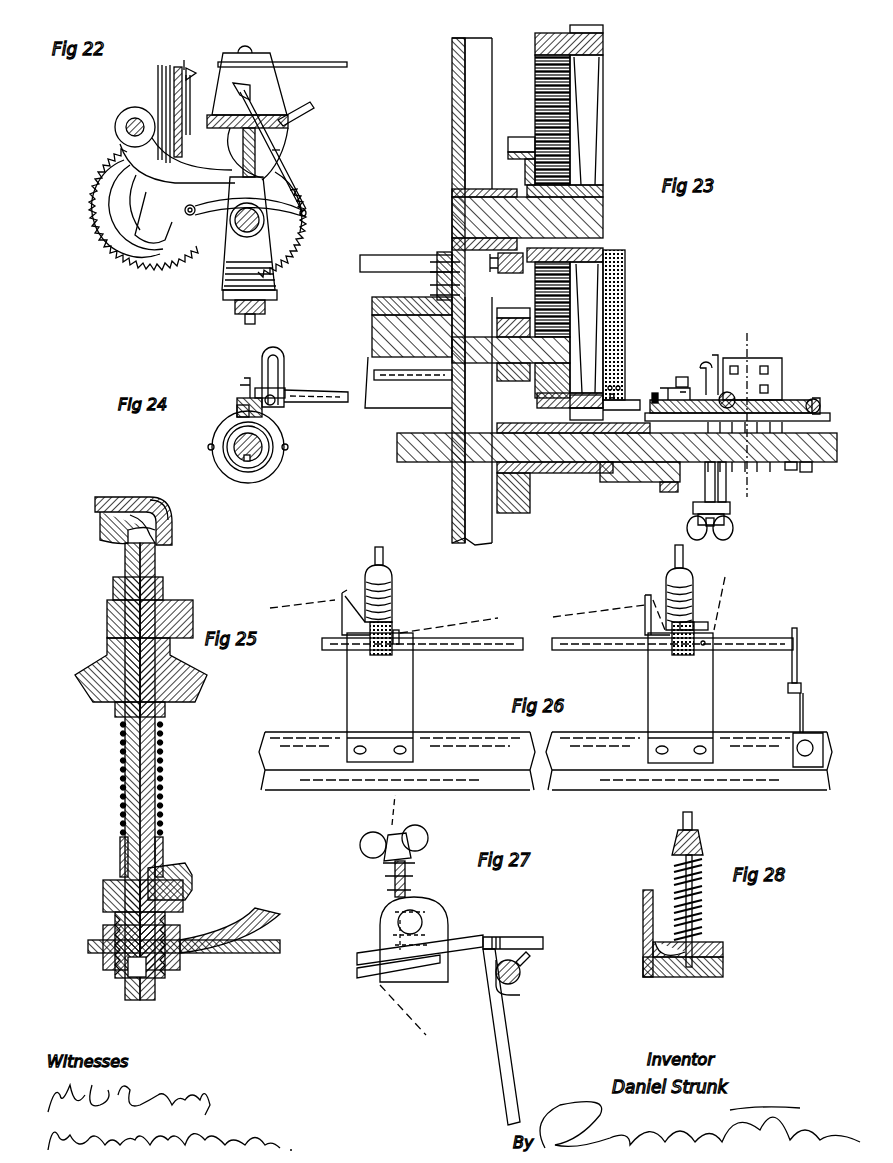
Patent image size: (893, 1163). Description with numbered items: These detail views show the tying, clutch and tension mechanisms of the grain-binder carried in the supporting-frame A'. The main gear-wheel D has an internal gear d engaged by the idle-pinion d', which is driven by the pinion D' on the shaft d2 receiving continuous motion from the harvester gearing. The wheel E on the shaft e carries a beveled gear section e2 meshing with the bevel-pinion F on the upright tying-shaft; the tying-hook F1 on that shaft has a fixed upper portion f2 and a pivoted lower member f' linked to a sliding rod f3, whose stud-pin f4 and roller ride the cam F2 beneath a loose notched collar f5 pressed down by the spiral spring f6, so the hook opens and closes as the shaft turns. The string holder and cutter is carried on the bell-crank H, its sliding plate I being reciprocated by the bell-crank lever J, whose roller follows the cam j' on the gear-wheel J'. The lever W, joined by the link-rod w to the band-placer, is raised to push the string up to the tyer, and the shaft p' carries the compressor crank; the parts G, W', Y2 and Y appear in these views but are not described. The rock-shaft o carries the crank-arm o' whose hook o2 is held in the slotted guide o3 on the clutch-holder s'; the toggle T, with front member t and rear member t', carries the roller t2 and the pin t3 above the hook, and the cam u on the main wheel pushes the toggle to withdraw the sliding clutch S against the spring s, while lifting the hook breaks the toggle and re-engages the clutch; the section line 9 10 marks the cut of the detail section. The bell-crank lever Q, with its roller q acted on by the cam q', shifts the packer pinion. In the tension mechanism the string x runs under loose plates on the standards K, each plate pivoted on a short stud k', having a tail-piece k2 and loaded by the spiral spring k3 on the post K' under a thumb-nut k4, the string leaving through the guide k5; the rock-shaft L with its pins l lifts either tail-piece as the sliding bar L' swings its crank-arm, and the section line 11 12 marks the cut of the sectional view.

In FIG. 22, the bar G is at (282, 56).
In FIG. 22, the wheel E is at (253, 250).
In FIG. 22, the shaft e is at (247, 237).
In FIG. 22, the beveled gear section e2 is at (285, 224).
In FIG. 22, the gear-wheel J' is at (143, 209).
In FIG. 22, the cam j' is at (136, 207).
In FIG. 22, the shaft p' is at (121, 127).
In FIG. 22, the bell-crank lever J is at (204, 133).
In FIG. 22, the bell-crank H is at (176, 114).
In FIG. 22, the sliding plate I is at (182, 57).
In FIG. 22, the lever W is at (245, 202).
In FIG. 22, the connecting rod W' is at (285, 162).
In FIG. 22, the link-rod w is at (282, 150).
In FIG. 22, the arm Y2 is at (242, 82).
In FIG. 22, the lever Y is at (296, 107).
In FIG. 23, the supporting-frame A' is at (472, 291).
In FIG. 23, the internal gear d is at (556, 105).
In FIG. 23, the main gear-wheel D is at (594, 224).
In FIG. 23, the roller q is at (521, 152).
In FIG. 23, the bell-crank lever Q is at (415, 262).
In FIG. 23, the cam q' is at (506, 279).
In FIG. 23, the idle-pinion d' is at (533, 299).
In FIG. 23, the rock-shaft o is at (408, 382).
In FIG. 23, the shaft d2 is at (602, 468).
In FIG. 24, the shaft d2 is at (262, 447).
In FIG. 23, the pinion D' is at (561, 470).
In FIG. 23, the cam u is at (635, 398).
In FIG. 23, the toggle T is at (731, 391).
In FIG. 23, the front member t is at (816, 392).
In FIG. 24, the front member t is at (237, 397).
In FIG. 23, the clutch-holder s' is at (744, 415).
In FIG. 23, the roller t2 is at (657, 395).
In FIG. 23, the rear member t' is at (680, 376).
In FIG. 23, the pin t3 is at (733, 390).
In FIG. 24, the pin t3 is at (280, 388).
In FIG. 23, the section line 10 is at (741, 403).
In FIG. 23, the spring s is at (760, 455).
In FIG. 24, the spring s is at (251, 439).
In FIG. 23, the sliding clutch S is at (655, 492).
In FIG. 24, the sliding clutch S is at (248, 483).
In FIG. 23, the section line 9 is at (718, 501).
In FIG. 24, the slotted guide o3 is at (284, 370).
In FIG. 24, the hook o2 is at (275, 405).
In FIG. 24, the crank-arm o' is at (316, 407).
In FIG. 25, the bevel-pinion F is at (205, 685).
In FIG. 25, the upper portion of tying-hook f2 is at (100, 497).
In FIG. 25, the lower member of tying-hook f' is at (112, 531).
In FIG. 25, the tying-hook F1 is at (153, 517).
In FIG. 25, the sliding rod f3 is at (160, 592).
In FIG. 25, the spiral spring f6 is at (162, 805).
In FIG. 25, the loose collar f5 is at (120, 845).
In FIG. 25, the stud-pin f4 is at (192, 880).
In FIG. 25, the cam F2 is at (103, 902).
In FIG. 26, the standards K is at (530, 698).
In FIG. 27, the standards K is at (426, 1030).
In FIG. 28, the standards K is at (699, 948).
In FIG. 26, the pins l is at (396, 648).
In FIG. 27, the pins l is at (522, 962).
In FIG. 26, the spiral spring k3 is at (392, 600).
In FIG. 27, the spiral spring k3 is at (412, 878).
In FIG. 28, the spiral spring k3 is at (703, 908).
In FIG. 26, the thumb-nuts k4 is at (383, 553).
In FIG. 27, the thumb-nuts k4 is at (360, 848).
In FIG. 28, the thumb-nuts k4 is at (703, 840).
In FIG. 26, the guide k5 is at (349, 607).
In FIG. 27, the guide k5 is at (432, 918).
In FIG. 28, the guide k5 is at (643, 920).
In FIG. 26, the string x is at (389, 616).
In FIG. 26, the rock-shaft L is at (672, 635).
In FIG. 26, the sliding bar L' is at (792, 697).
In FIG. 27, the short stud k' is at (386, 977).
In FIG. 27, the tail-piece k2 is at (530, 937).
In FIG. 27, the section line 11 is at (408, 1018).
In FIG. 27, the section line 12 is at (384, 810).
In FIG. 28, the post K' is at (683, 981).